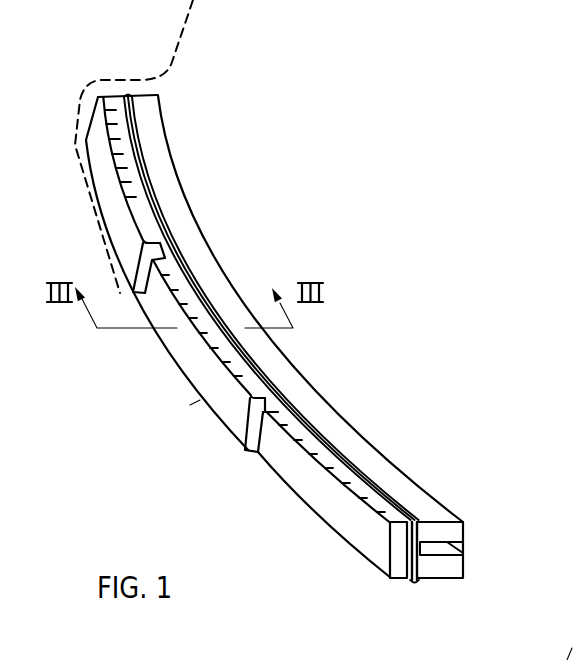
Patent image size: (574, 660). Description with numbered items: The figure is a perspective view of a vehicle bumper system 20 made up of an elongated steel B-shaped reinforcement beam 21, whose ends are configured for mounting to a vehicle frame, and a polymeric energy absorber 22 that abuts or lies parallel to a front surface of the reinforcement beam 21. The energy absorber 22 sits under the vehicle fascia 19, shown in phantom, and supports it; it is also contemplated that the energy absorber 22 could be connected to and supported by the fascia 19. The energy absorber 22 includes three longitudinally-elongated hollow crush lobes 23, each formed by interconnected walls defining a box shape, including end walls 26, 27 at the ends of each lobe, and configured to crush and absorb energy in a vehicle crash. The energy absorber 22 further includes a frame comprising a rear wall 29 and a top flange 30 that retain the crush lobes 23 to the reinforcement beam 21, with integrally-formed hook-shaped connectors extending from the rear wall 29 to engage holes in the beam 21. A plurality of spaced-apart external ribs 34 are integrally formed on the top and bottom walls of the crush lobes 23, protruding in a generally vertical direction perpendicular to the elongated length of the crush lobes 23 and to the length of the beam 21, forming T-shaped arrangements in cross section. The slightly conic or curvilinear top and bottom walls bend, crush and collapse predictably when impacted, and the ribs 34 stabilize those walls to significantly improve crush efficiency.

The fascia 19 is at (182, 16).
The vehicle bumper system 20 is at (403, 374).
The reinforcement beam 21 is at (465, 579).
The energy absorber 22 is at (200, 400).
The crush lobes 23 is at (265, 553).
The end wall 26 is at (258, 443).
The end wall 27 is at (400, 568).
The rear wall 29 is at (279, 397).
The top flange 30 is at (357, 463).
The external ribs 34 is at (38, 223).